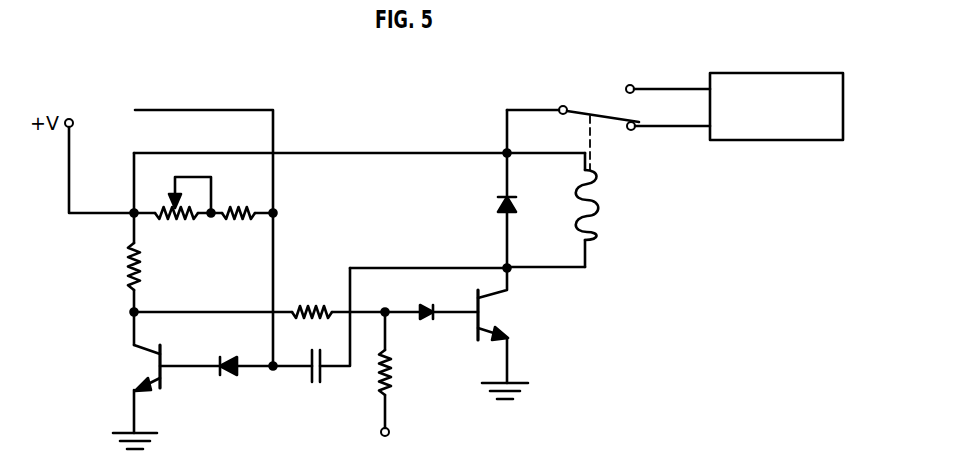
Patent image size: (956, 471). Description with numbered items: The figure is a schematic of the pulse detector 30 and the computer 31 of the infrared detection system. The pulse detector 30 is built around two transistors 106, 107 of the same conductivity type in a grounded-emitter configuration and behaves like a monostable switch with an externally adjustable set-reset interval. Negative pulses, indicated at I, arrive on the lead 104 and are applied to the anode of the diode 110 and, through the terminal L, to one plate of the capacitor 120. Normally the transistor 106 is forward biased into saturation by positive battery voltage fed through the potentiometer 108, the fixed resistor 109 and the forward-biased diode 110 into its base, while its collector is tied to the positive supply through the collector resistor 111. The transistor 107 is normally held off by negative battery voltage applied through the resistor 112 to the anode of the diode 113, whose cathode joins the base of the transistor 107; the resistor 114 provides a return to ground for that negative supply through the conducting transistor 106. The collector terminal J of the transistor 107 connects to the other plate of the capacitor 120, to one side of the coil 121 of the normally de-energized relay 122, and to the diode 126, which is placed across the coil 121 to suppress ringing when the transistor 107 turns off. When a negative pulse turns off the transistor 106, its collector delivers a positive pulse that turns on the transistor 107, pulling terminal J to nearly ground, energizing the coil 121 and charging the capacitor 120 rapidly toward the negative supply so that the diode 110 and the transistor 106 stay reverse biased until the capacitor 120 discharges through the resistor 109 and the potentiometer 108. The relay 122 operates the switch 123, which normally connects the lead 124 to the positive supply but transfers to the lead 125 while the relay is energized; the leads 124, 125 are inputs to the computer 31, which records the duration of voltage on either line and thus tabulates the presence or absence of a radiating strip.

The pulse detector 30 is at (368, 130).
The computer 31 is at (795, 73).
The lead 104 is at (200, 110).
The transistor 106 is at (150, 377).
The transistor 107 is at (488, 316).
The potentiometer 108 is at (178, 216).
The fixed resistor 109 is at (247, 210).
The diode 110 is at (228, 357).
The collector resistor 111 is at (128, 268).
The resistor 112 is at (395, 374).
The diode 113 is at (423, 320).
The resistor 114 is at (300, 308).
The capacitor 120 is at (315, 378).
The coil 121 is at (600, 216).
The relay 122 is at (619, 155).
The switch 123 is at (603, 122).
The lead 124 is at (690, 128).
The lead 125 is at (683, 86).
The diode 126 is at (496, 204).
The negative pulse I is at (276, 109).
The collector terminal J is at (511, 271).
The terminal L is at (276, 372).